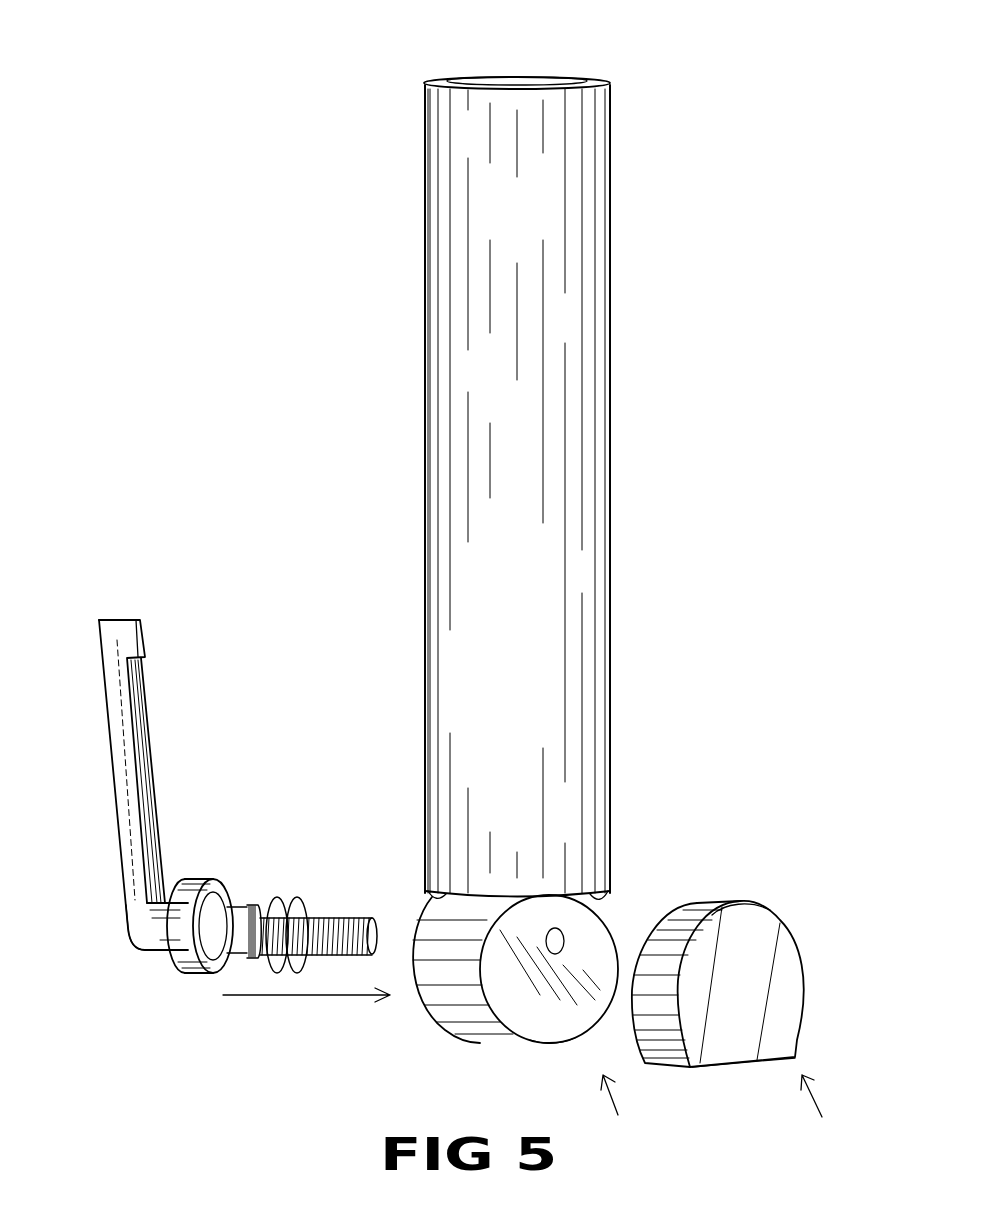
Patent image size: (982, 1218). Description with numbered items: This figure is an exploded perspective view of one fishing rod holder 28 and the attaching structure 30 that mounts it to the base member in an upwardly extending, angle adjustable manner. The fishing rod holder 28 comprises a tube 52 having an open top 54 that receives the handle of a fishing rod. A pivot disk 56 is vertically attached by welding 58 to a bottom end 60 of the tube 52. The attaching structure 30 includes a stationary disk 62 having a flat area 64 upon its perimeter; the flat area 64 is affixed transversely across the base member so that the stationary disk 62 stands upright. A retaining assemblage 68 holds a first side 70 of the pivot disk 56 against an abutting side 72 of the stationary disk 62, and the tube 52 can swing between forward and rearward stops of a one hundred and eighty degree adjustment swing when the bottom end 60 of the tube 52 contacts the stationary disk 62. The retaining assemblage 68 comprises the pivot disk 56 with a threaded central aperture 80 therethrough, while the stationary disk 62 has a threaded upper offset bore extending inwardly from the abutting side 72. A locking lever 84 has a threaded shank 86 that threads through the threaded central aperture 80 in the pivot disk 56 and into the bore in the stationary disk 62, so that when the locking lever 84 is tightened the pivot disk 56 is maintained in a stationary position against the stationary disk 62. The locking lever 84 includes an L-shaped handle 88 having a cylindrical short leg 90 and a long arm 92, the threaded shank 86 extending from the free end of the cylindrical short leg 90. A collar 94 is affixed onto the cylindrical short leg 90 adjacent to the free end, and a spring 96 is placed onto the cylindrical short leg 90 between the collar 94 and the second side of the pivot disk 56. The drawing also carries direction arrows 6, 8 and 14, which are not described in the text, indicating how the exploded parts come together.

The assembly direction arrow 6 is at (297, 1024).
The direction arrow 8 is at (618, 1113).
The direction arrow 14 is at (816, 1116).
The fishing rod holder 28 is at (622, 335).
The attaching structure 30 is at (772, 898).
The tube 52 is at (412, 352).
The open top 54 is at (535, 78).
The pivot disk 56 is at (410, 1005).
The welding 58 is at (428, 897).
The bottom end 60 is at (612, 898).
The stationary disk 62 is at (810, 942).
The flat area 64 is at (736, 1065).
The retaining assemblage 68 is at (196, 688).
The first side 70 is at (555, 1042).
The abutting side 72 is at (640, 1050).
The threaded central aperture 80 is at (565, 940).
The locking lever 84 is at (168, 786).
The threaded shank 86 is at (335, 922).
The L-shaped handle 88 is at (108, 875).
The cylindrical short leg 90 is at (157, 940).
The long arm 92 is at (110, 702).
The collar 94 is at (213, 970).
The spring 96 is at (290, 898).